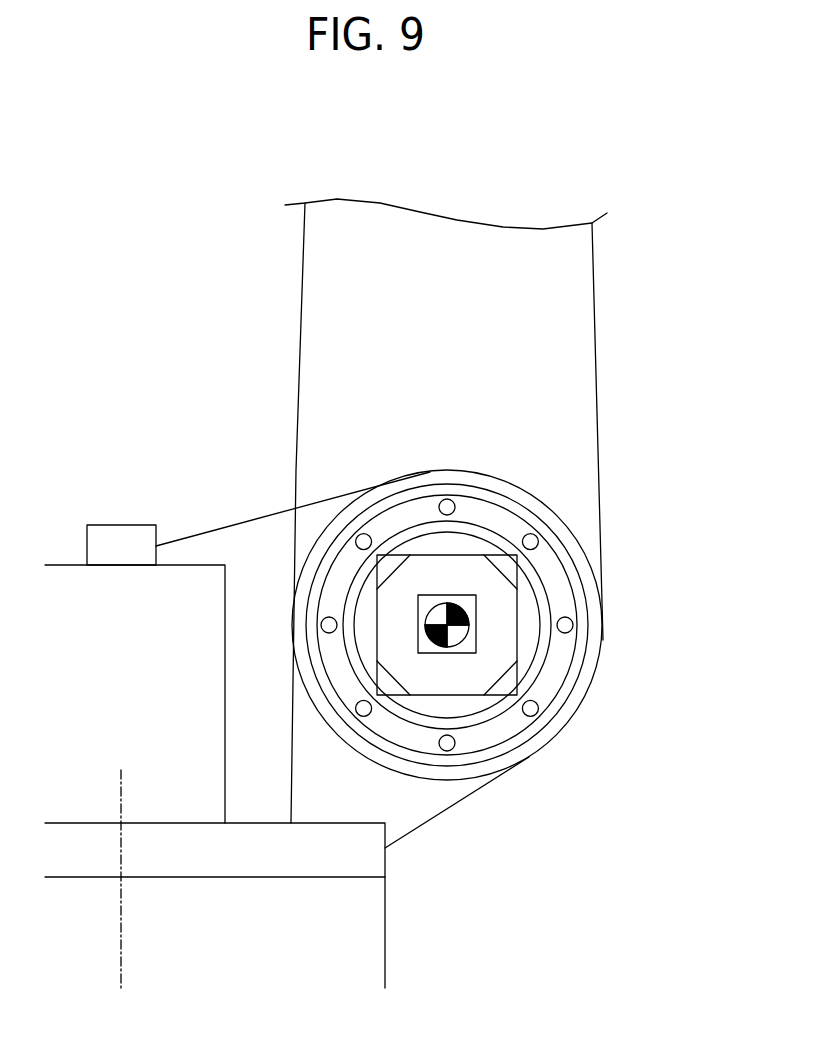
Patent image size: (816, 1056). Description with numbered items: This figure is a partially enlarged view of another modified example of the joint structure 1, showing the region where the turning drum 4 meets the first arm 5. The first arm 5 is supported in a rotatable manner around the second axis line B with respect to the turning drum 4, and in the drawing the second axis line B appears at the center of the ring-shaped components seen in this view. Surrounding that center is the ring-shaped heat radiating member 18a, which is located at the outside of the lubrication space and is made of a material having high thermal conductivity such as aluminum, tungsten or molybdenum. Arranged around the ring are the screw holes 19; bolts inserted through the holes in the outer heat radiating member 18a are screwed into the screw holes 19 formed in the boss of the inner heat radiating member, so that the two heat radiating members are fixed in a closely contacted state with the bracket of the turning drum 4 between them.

The joint structure 1 is at (603, 652).
The turning drum 4 is at (195, 532).
The first arm 5 is at (593, 335).
The heat radiating member 18a is at (517, 748).
The screw hole 19 is at (444, 499).
The second axis line B is at (447, 625).